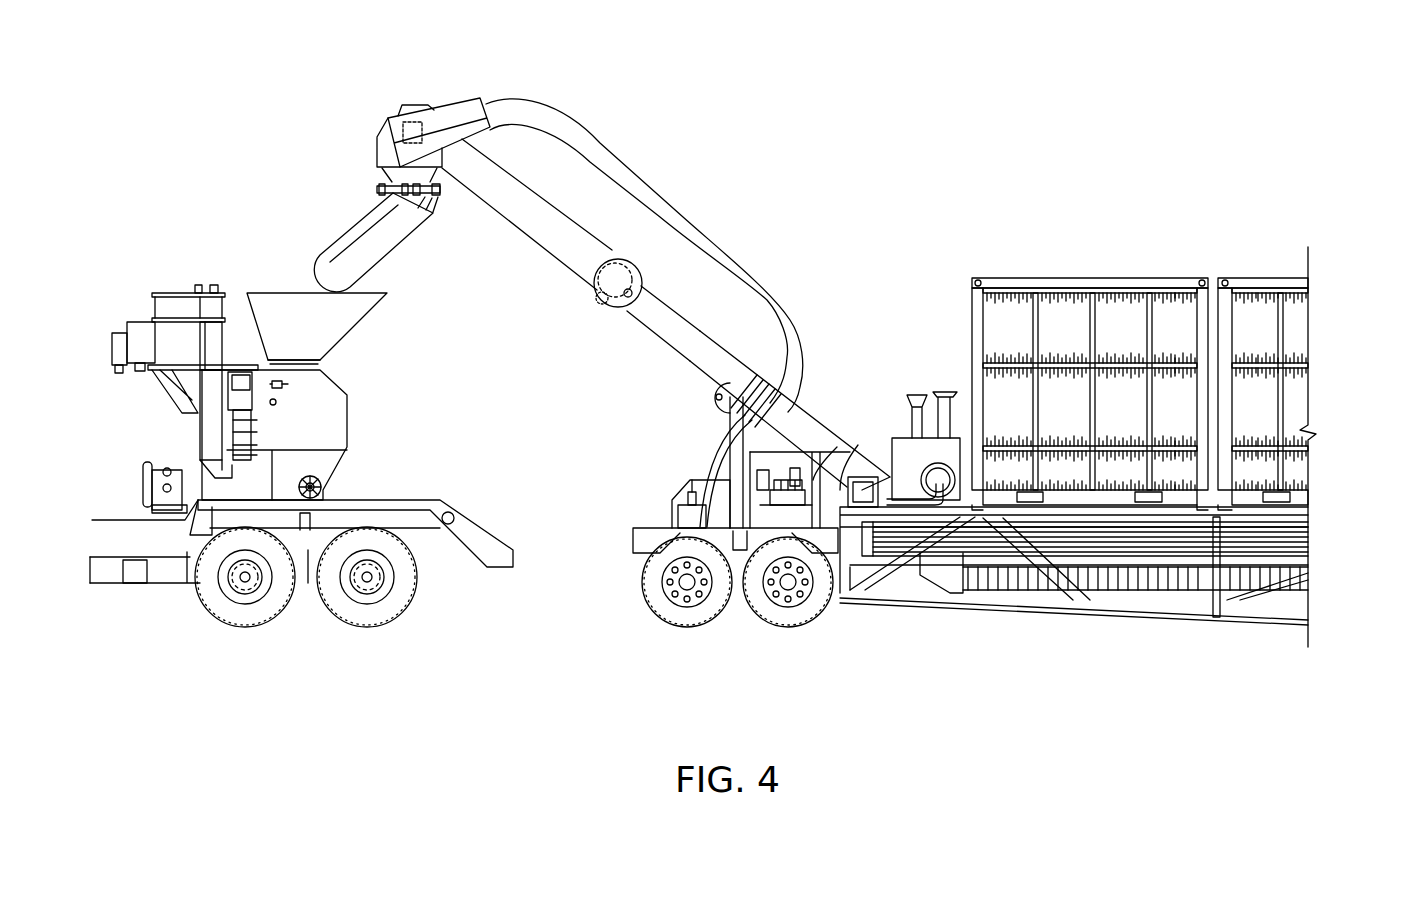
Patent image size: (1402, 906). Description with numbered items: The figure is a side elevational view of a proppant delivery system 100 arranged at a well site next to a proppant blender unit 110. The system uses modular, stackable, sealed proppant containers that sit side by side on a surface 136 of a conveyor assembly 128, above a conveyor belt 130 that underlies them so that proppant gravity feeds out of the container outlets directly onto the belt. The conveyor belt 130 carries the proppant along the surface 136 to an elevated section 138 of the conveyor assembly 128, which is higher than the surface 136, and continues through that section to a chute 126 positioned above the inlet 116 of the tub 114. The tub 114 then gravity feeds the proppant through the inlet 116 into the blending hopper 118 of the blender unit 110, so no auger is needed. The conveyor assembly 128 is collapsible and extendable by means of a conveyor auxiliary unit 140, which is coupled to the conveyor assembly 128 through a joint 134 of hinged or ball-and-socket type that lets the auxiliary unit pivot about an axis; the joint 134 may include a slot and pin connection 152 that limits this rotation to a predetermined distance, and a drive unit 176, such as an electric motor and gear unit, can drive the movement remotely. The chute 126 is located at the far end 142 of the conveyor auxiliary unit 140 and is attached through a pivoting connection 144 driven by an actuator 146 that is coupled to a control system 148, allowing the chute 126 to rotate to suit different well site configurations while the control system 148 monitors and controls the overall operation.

The proppant delivery system 100 is at (1205, 130).
The proppant blender unit 110 is at (200, 245).
The tub 114 is at (367, 302).
The inlet 116 is at (293, 352).
The blending hopper 118 is at (327, 435).
The chute 126 is at (350, 232).
The conveyor assembly 128 is at (712, 290).
The conveyor belt 130 is at (1090, 597).
The joint 134 is at (633, 257).
The surface 136 is at (1290, 497).
The elevated section 138 is at (634, 352).
The conveyor auxiliary unit 140 is at (505, 247).
The far end 142 is at (380, 90).
The pivoting connection 144 is at (386, 184).
The actuator 146 is at (413, 120).
The control system 148 is at (627, 512).
The slot and pin connection 152 is at (648, 255).
The drive unit 176 is at (597, 298).